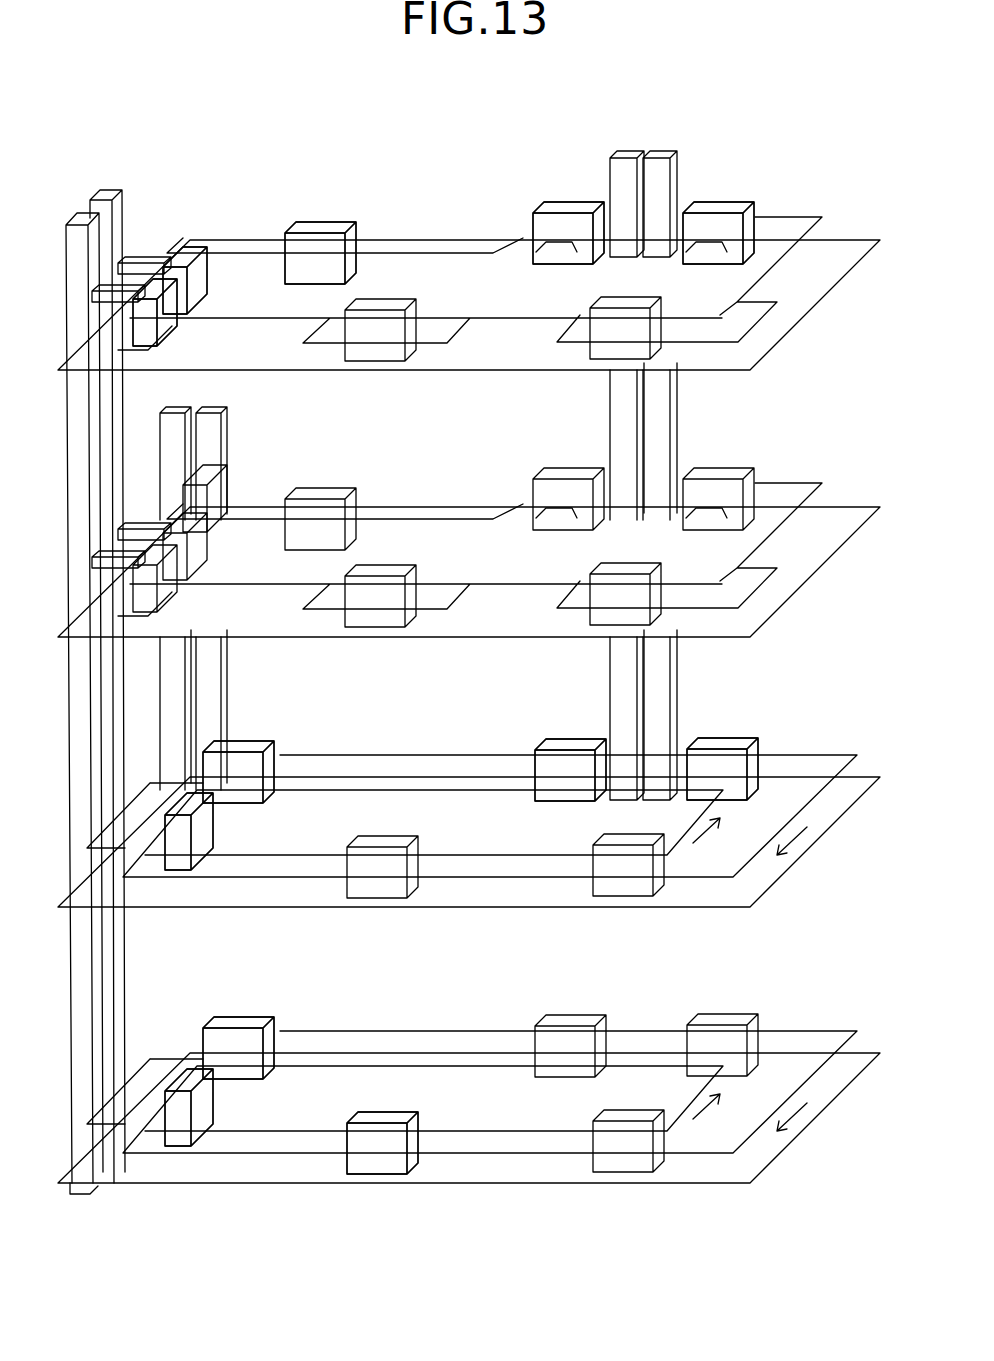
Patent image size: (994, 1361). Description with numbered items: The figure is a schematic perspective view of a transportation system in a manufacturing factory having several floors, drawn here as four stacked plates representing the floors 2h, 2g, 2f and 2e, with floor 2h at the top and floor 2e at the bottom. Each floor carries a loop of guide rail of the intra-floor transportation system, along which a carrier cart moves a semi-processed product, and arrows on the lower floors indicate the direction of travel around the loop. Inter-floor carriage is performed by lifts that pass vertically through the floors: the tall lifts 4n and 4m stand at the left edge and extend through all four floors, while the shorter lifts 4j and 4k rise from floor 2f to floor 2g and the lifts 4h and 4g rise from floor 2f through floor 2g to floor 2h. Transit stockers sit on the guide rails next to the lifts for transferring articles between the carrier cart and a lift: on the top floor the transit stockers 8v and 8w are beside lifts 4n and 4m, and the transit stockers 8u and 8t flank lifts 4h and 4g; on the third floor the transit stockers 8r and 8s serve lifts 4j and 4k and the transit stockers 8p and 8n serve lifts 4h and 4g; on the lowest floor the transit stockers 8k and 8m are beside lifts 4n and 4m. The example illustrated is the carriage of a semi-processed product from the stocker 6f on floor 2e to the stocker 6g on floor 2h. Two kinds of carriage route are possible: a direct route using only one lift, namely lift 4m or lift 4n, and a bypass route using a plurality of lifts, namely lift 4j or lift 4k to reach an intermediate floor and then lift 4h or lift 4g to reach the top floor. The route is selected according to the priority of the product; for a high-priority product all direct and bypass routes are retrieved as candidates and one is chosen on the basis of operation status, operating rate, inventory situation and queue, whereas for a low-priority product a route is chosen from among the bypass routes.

The floor 2h is at (843, 245).
The floor 2g is at (843, 510).
The floor 2f is at (758, 883).
The floor 2e is at (760, 1160).
The lift 4n is at (80, 222).
The lift 4m is at (98, 192).
The lift 4h is at (648, 690).
The lift 4g is at (675, 692).
The lift 4k is at (175, 703).
The lift 4j is at (205, 672).
The stocker 6g is at (325, 232).
The stocker 6f is at (390, 1142).
The transit stocker 8u is at (565, 207).
The transit stocker 8t is at (728, 203).
The transit stocker 8v is at (188, 248).
The transit stocker 8w is at (175, 312).
The transit stocker 8r is at (253, 773).
The transit stocker 8s is at (208, 830).
The transit stocker 8p is at (563, 745).
The transit stocker 8n is at (757, 742).
The transit stocker 8k is at (260, 1046).
The transit stocker 8m is at (187, 1120).